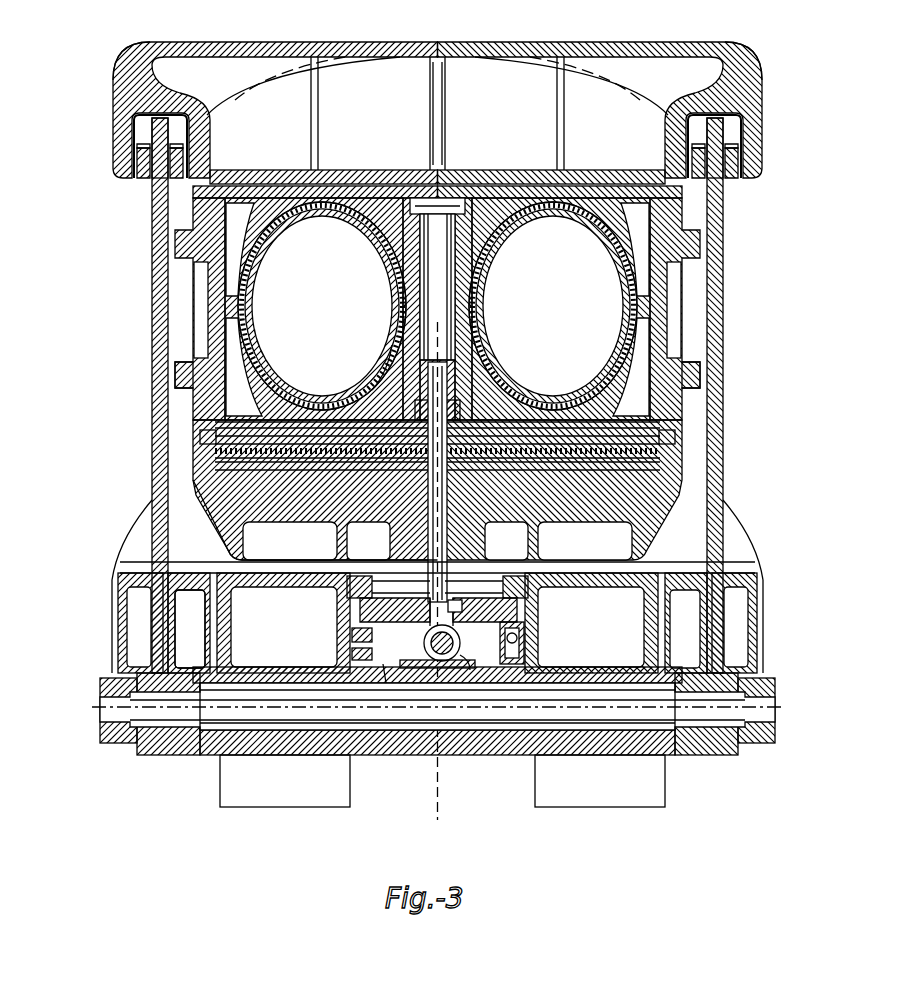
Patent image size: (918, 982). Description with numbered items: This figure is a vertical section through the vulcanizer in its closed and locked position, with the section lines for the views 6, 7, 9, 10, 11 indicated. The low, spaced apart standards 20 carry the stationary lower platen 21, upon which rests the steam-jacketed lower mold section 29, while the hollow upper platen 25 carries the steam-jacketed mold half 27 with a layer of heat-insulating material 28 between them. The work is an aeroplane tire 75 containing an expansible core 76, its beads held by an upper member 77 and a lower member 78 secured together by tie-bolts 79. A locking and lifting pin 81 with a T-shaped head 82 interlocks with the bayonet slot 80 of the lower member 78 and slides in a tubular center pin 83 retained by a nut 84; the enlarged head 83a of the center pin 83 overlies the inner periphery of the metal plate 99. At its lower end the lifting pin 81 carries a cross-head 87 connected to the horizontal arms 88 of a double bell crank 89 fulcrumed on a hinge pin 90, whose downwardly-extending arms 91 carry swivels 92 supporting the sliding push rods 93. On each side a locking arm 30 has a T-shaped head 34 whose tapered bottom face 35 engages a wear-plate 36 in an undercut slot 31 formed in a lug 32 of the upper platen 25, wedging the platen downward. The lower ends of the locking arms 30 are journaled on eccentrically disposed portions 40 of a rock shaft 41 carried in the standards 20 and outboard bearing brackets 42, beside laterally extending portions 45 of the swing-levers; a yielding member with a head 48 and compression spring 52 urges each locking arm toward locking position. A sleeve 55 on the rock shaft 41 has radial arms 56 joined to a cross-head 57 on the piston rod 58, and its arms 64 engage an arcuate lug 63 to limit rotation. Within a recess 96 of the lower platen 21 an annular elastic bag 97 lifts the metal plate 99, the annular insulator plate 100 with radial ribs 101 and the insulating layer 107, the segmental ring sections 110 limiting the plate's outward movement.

The standards 20 is at (240, 808).
The lower platen 21 is at (230, 498).
The upper platen 25 is at (562, 43).
The steam-jacketed mold half 27 is at (690, 262).
The layer of heat-insulating material 28 is at (690, 188).
The lower mold section 29 is at (692, 346).
The locking arms 30 is at (152, 312).
The undercut slots 31 is at (148, 116).
The lugs 32 is at (138, 60).
The T-shaped heads 34 is at (150, 126).
The bottom faces 35 is at (145, 148).
The wear-plates 36 is at (140, 168).
The eccentrically disposed portions 40 is at (162, 747).
The rock shaft 41 is at (505, 738).
The outboard bearing brackets 42 is at (100, 686).
The laterally extending portions 45 is at (175, 617).
The head 48 is at (152, 578).
The compression spring 52 is at (716, 588).
The sleeve 55 is at (398, 742).
The radial arms 56 is at (445, 665).
The cross-head 57 is at (461, 652).
The piston rod 58 is at (424, 645).
The arcuate lug 63 is at (352, 630).
The arms 64 is at (352, 652).
The aeroplane tire 75 is at (610, 372).
The expansible core 76 is at (608, 238).
The upper member 77 is at (424, 270).
The lower member 78 is at (480, 368).
The tie-bolts 79 is at (395, 232).
The bayonet slot 80 is at (396, 366).
The lifting pin 81 is at (370, 541).
The T-shaped head 82 is at (480, 352).
The tubular center pin 83 is at (290, 541).
The enlarged head 83a is at (496, 421).
The nut 84 is at (485, 541).
The cross-head 87 is at (460, 613).
The horizontal arms 88 is at (350, 605).
The double bell crank 89 is at (532, 580).
The hinge pin 90 is at (459, 405).
The downwardly-extending arms 91 is at (525, 624).
The swivels 92 is at (352, 680).
The push rods 93 is at (520, 643).
The recess 96 is at (692, 471).
The annular elastic bag 97 is at (692, 457).
The metal plate 99 is at (692, 447).
The annular insulator plate 100 is at (695, 428).
The radial ribs 101 is at (252, 428).
The layer of heat insulating material 107 is at (622, 428).
The segmental ring sections 110 is at (182, 452).
The section line 6- 6 is at (150, 620).
The section line 7- 7 is at (152, 440).
The section line 9- 9 is at (418, 323).
The section line 10- 10 is at (722, 740).
The section line 11- 11 is at (365, 378).